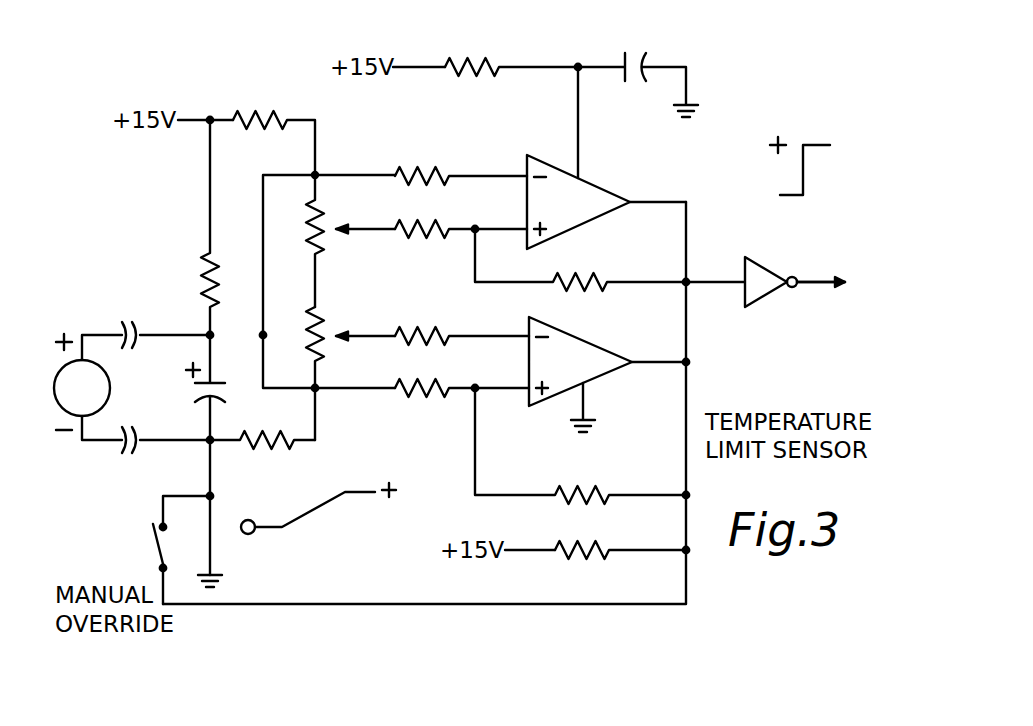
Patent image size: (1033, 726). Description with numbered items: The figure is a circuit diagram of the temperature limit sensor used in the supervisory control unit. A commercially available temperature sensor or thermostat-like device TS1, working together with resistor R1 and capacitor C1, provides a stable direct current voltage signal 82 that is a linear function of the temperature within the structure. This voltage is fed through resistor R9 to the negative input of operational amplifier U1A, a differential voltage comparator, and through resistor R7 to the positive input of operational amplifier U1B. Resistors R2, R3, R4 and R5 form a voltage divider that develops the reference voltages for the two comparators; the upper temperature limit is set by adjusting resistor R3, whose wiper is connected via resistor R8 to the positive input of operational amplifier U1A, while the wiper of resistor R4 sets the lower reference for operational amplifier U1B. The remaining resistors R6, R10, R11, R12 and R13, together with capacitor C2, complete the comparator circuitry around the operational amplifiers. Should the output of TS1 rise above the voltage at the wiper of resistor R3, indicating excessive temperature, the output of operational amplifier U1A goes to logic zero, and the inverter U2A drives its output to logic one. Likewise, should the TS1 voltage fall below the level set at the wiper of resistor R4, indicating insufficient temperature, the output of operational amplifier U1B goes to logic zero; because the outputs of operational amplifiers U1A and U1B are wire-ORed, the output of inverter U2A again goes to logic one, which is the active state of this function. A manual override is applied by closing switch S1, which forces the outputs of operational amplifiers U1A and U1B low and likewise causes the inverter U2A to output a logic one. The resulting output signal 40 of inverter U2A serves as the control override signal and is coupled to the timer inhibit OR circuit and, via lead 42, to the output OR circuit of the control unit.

The output signal 40 is at (808, 165).
The lead 42 is at (816, 288).
The stable direct current voltage signal 82 is at (318, 512).
The resistor R1 is at (190, 227).
The resistor R2 is at (274, 129).
The resistor R3 is at (330, 241).
The resistor R4 is at (332, 373).
The resistor R5 is at (262, 457).
The resistor R6 is at (462, 405).
The resistor R7 is at (462, 319).
The resistor R8 is at (461, 245).
The resistor R9 is at (461, 161).
The resistor R10 is at (511, 51).
The resistor R11 is at (580, 277).
The resistor R12 is at (580, 446).
The resistor R13 is at (620, 568).
The capacitor C1 is at (217, 455).
The capacitor C2 is at (638, 70).
The operational amplifier U1A is at (598, 196).
The operational amplifier U1B is at (598, 372).
The inverter U2A is at (765, 268).
The temperature sensor TS1 is at (132, 387).
The switch S1 is at (181, 550).